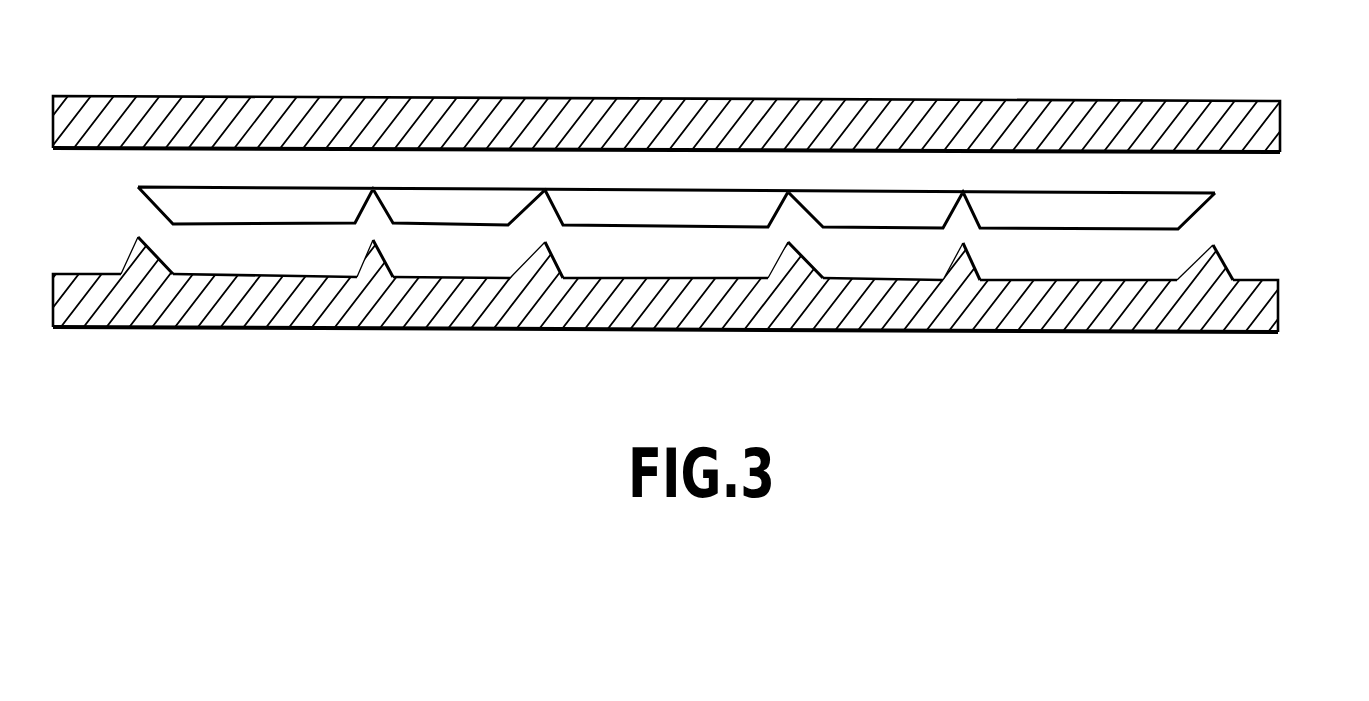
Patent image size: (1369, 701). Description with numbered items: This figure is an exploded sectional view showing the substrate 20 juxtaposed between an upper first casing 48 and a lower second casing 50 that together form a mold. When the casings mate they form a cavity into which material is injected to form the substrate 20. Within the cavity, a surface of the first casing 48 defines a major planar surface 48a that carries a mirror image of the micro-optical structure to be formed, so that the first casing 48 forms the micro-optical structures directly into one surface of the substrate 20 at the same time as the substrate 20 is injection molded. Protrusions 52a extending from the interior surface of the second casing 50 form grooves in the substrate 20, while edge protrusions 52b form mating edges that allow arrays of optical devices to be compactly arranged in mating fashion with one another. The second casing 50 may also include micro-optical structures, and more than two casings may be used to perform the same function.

The substrate 20 is at (113, 216).
The first casing 48 is at (691, 116).
The major planar surface 48a is at (1217, 154).
The second casing 50 is at (680, 319).
The protrusions 52a is at (972, 262).
The edge protrusions 52b is at (1228, 268).